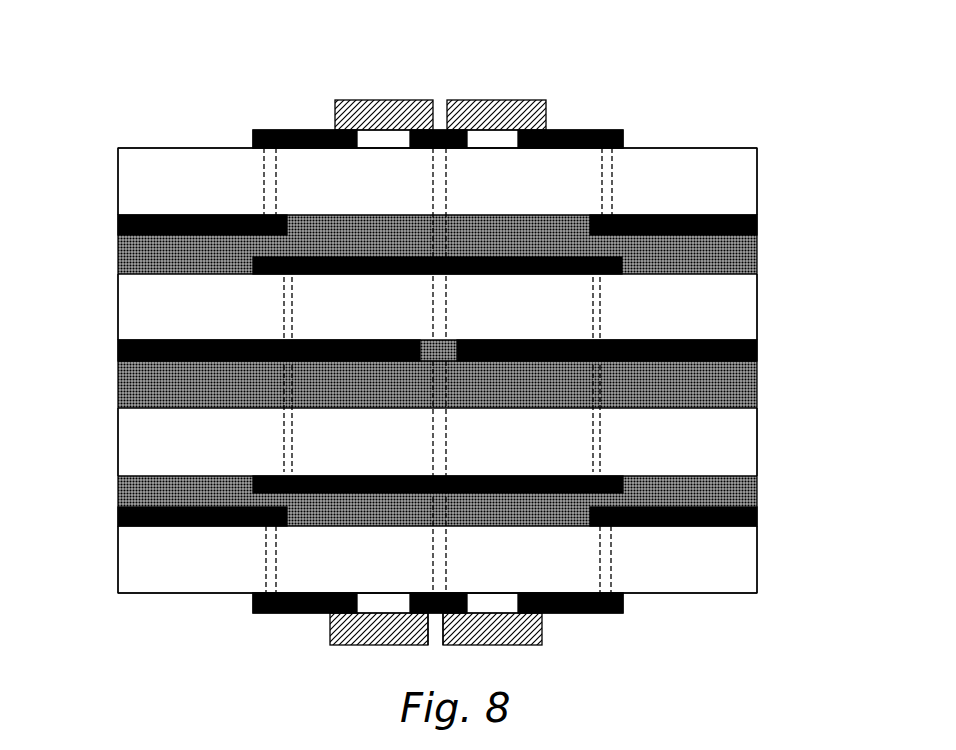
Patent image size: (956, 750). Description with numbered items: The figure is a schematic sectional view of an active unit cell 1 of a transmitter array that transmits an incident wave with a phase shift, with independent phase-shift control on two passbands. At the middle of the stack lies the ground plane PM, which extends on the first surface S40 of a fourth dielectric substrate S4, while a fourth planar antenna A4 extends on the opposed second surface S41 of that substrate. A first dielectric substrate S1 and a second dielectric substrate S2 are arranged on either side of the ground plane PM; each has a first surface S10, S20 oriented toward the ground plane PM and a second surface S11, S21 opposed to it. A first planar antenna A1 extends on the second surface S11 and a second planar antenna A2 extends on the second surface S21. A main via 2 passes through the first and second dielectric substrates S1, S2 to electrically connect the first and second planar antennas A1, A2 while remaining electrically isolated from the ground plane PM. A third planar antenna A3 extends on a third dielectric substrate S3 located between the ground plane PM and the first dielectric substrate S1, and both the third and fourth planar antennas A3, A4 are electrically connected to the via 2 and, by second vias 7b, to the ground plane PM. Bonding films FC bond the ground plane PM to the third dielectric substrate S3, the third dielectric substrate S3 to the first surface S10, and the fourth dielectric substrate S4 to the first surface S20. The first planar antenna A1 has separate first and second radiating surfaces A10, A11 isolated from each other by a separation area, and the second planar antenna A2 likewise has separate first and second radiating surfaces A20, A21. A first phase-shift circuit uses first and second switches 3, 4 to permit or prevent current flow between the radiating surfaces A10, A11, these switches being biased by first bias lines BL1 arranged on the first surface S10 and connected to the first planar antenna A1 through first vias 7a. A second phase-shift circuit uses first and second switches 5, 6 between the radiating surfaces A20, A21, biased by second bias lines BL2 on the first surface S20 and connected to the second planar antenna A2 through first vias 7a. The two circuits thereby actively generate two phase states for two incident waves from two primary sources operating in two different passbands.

The unit cell 1 is at (712, 98).
The via 2 is at (433, 558).
The first switch 3 is at (374, 646).
The second switch 4 is at (512, 648).
The first switch 5 is at (380, 100).
The second switch 6 is at (512, 100).
The first vias 7a is at (262, 160).
The second vias 7b is at (283, 286).
The first planar antenna A1 is at (576, 618).
The second planar antenna A2 is at (578, 128).
The third planar antenna A3 is at (253, 474).
The fourth planar antenna A4 is at (615, 275).
The first radiating surface A10 is at (436, 648).
The second radiating surface A11 is at (253, 600).
The first radiating surface A20 is at (440, 100).
The second radiating surface A21 is at (277, 130).
The first bias lines BL1 is at (118, 515).
The second bias lines BL2 is at (118, 224).
The bonding film FC is at (118, 258).
The ground plane PM is at (118, 350).
The first dielectric substrate S1 is at (732, 558).
The second dielectric substrate S2 is at (735, 172).
The third dielectric substrate S3 is at (732, 452).
The fourth dielectric substrate S4 is at (160, 313).
The first surface S10 is at (757, 526).
The second surface S11 is at (707, 600).
The first surface S20 is at (757, 215).
The second surface S21 is at (712, 148).
The first surface S40 is at (147, 339).
The second surface S41 is at (757, 275).